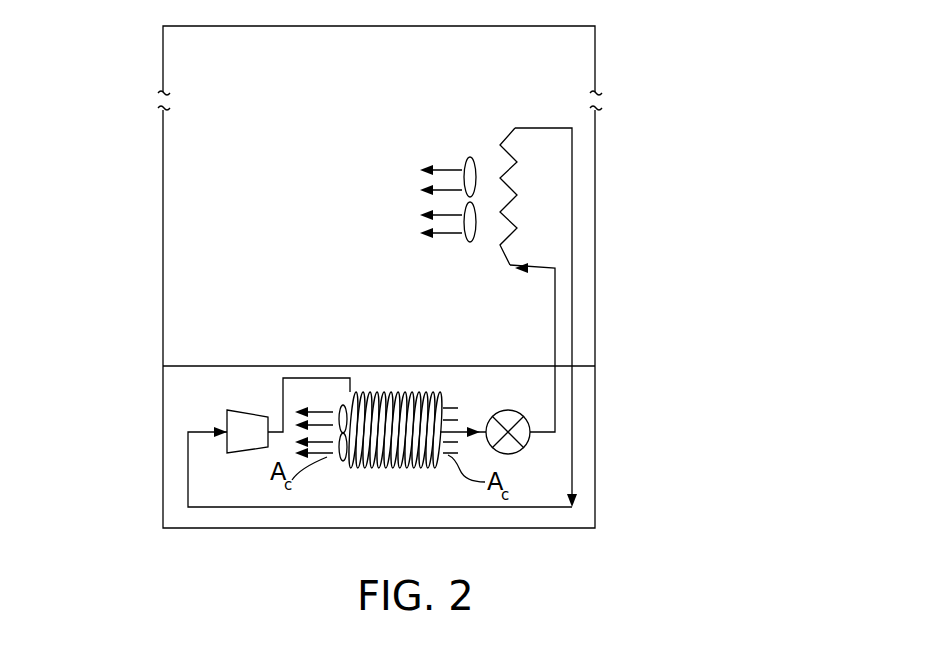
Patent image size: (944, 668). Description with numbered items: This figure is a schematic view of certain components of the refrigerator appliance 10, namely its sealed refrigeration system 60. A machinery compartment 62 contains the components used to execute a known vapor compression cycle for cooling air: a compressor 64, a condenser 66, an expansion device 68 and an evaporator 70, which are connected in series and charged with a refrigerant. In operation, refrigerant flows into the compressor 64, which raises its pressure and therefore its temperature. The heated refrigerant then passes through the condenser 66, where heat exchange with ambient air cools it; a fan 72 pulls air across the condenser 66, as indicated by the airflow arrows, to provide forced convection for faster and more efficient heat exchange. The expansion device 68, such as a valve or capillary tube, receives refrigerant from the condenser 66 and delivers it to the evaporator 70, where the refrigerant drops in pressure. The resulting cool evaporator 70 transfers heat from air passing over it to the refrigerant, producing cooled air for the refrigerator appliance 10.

The refrigerator appliance 10 is at (105, 150).
The sealed refrigeration system 60 is at (372, 348).
The machinery compartment 62 is at (198, 395).
The compressor 64 is at (247, 410).
The condenser 66 is at (410, 398).
The expansion device 68 is at (503, 410).
The evaporator 70 is at (497, 162).
The fan 72 is at (337, 412).